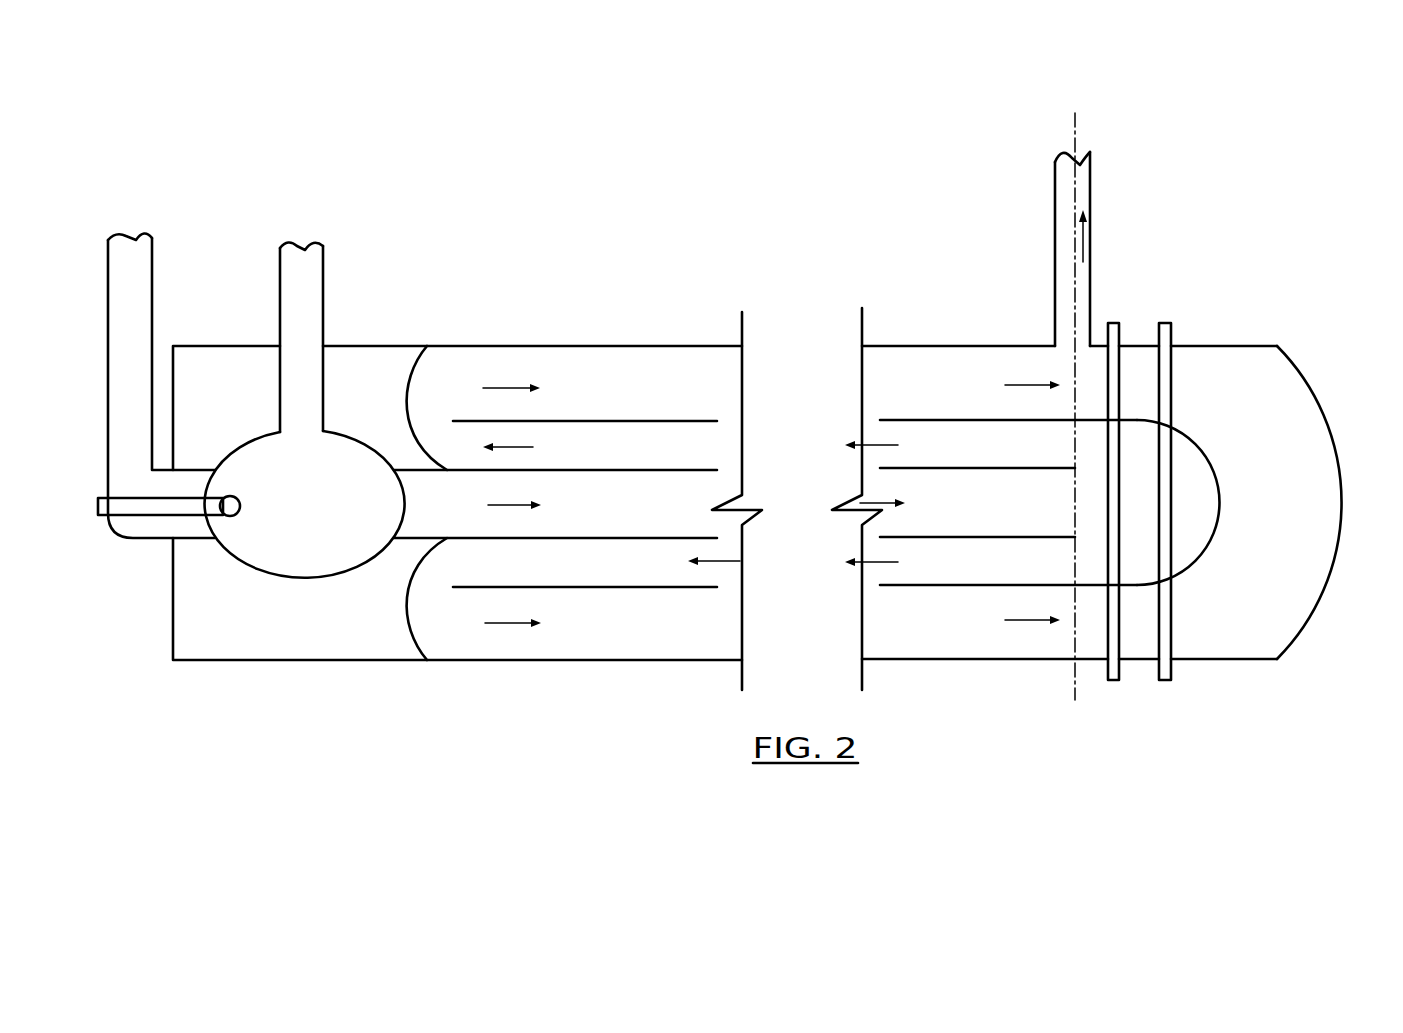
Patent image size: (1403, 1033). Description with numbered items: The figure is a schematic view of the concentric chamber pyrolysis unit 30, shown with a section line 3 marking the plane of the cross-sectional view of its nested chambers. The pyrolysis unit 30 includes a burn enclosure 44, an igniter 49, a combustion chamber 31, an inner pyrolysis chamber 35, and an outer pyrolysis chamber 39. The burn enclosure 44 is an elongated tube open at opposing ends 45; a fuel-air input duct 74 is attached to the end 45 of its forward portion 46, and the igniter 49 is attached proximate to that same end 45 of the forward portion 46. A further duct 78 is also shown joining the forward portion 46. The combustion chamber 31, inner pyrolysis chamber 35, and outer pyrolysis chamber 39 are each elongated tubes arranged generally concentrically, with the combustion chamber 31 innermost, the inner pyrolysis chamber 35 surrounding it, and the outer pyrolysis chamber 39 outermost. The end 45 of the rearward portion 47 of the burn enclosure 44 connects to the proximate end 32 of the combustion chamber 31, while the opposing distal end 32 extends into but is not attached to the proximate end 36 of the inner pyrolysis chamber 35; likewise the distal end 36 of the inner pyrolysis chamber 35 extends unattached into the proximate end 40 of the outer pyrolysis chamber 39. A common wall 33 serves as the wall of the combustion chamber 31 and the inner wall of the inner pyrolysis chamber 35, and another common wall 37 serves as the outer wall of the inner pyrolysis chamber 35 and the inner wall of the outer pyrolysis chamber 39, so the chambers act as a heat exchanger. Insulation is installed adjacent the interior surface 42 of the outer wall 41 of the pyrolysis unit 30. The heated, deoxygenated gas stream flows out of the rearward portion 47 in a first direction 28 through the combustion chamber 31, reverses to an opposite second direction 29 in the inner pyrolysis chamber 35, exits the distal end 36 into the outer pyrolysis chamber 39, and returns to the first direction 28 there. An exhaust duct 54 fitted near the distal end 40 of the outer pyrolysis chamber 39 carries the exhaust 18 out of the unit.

The section line 3 is at (1073, 113).
The exhaust 18 is at (1083, 240).
The first direction 28 is at (508, 388).
The second direction 29 is at (518, 447).
The pyrolysis unit 30 is at (536, 285).
The combustion chamber 31 is at (599, 518).
The end of combustion chamber 32 is at (413, 530).
The common wall 33 is at (697, 468).
The inner pyrolysis chamber 35 is at (599, 460).
The end of inner pyrolysis chamber 36 is at (480, 548).
The common wall 37 is at (677, 420).
The outer pyrolysis chamber 39 is at (599, 398).
The end of outer pyrolysis chamber 40 is at (457, 362).
The outer wall 41 is at (668, 661).
The interior surface 42 is at (1203, 655).
The burn enclosure 44 is at (292, 517).
The end of burn enclosure 45 is at (233, 467).
The forward portion 46 is at (228, 558).
The rearward portion 47 is at (367, 566).
The igniter 49 is at (232, 515).
The exhaust duct 54 is at (1091, 288).
The fuel-air input duct 74 is at (113, 314).
The connecting pipe 78 is at (311, 298).